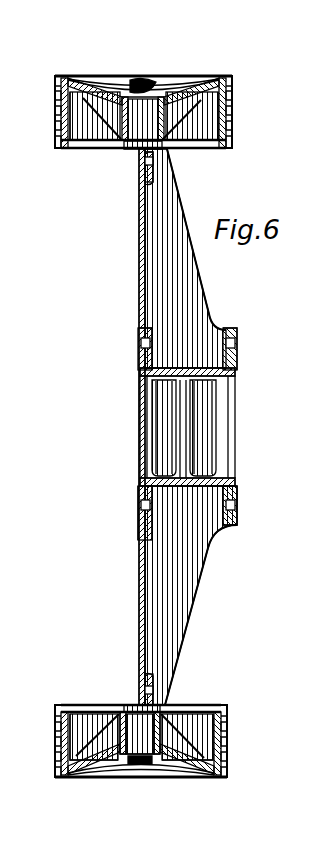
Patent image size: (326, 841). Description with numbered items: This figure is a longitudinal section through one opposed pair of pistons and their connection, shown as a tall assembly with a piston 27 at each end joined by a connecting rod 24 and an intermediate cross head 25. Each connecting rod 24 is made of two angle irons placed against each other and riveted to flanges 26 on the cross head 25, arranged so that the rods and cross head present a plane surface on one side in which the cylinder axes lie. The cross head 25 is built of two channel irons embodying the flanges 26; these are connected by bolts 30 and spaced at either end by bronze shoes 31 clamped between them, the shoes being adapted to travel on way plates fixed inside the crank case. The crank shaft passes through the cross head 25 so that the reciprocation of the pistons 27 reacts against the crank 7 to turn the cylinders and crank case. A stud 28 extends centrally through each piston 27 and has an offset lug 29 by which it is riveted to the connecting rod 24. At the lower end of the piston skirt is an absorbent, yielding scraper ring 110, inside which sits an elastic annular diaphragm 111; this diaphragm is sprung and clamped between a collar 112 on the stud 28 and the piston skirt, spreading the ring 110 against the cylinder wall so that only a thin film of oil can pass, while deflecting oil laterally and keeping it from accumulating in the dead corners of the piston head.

The crank 7 is at (255, 330).
The connecting rod 24 is at (182, 277).
The cross head 25 is at (152, 475).
The flange 26 is at (140, 349).
The piston 27 is at (234, 130).
The stud 28 is at (139, 130).
The offset lug 29 is at (147, 183).
The bolt 30 is at (212, 392).
The bronze shoe 31 is at (148, 419).
The scraper ring 110 is at (62, 144).
The elastic annular diaphragm 111 is at (78, 150).
The collar 112 is at (170, 152).